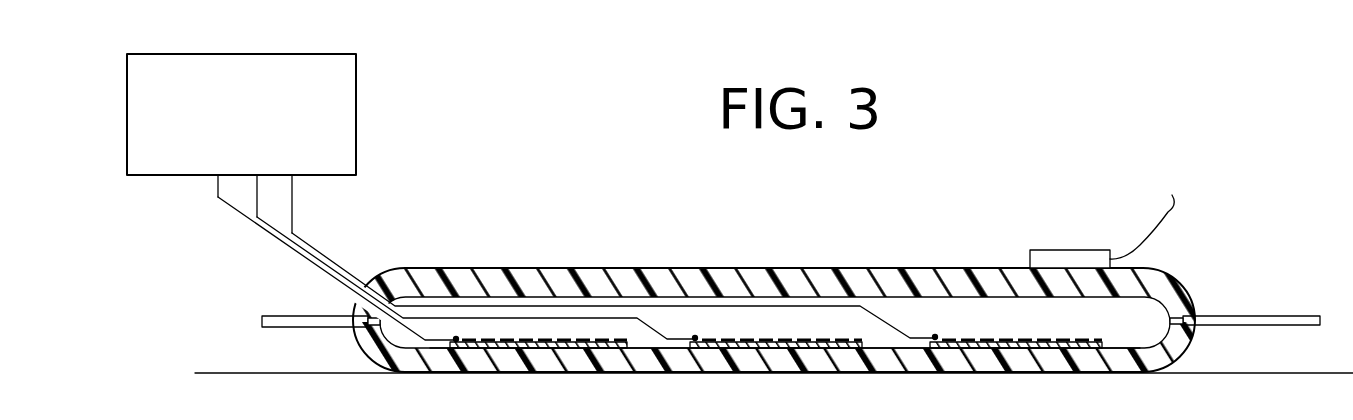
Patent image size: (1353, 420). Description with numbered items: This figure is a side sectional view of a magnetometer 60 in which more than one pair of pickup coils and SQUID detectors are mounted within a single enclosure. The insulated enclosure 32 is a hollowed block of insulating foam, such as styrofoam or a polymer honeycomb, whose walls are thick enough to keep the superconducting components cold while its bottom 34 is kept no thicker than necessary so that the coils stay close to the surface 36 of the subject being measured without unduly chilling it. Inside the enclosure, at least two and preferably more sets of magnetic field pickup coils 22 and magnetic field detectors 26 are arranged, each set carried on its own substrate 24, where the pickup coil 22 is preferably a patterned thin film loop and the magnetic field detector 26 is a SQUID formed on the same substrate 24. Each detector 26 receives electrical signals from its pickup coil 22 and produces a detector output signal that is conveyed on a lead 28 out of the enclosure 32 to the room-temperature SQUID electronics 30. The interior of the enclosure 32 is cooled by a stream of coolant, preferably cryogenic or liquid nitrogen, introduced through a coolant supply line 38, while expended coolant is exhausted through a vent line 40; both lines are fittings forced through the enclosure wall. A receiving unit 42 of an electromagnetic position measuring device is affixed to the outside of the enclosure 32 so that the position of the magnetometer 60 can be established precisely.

The magnetic field pickup coil 22 is at (522, 348).
The substrate 24 is at (602, 352).
The magnetic field detector 26 is at (467, 350).
The lead 28 is at (340, 264).
The SQUID electronics 30 is at (357, 112).
The insulated enclosure 32 is at (869, 267).
The bottom 34 is at (1032, 372).
The surface 36 is at (226, 371).
The coolant supply line 38 is at (1303, 316).
The vent line 40 is at (282, 316).
The receiving unit 42 is at (1038, 258).
The magnetometer 60 is at (614, 248).